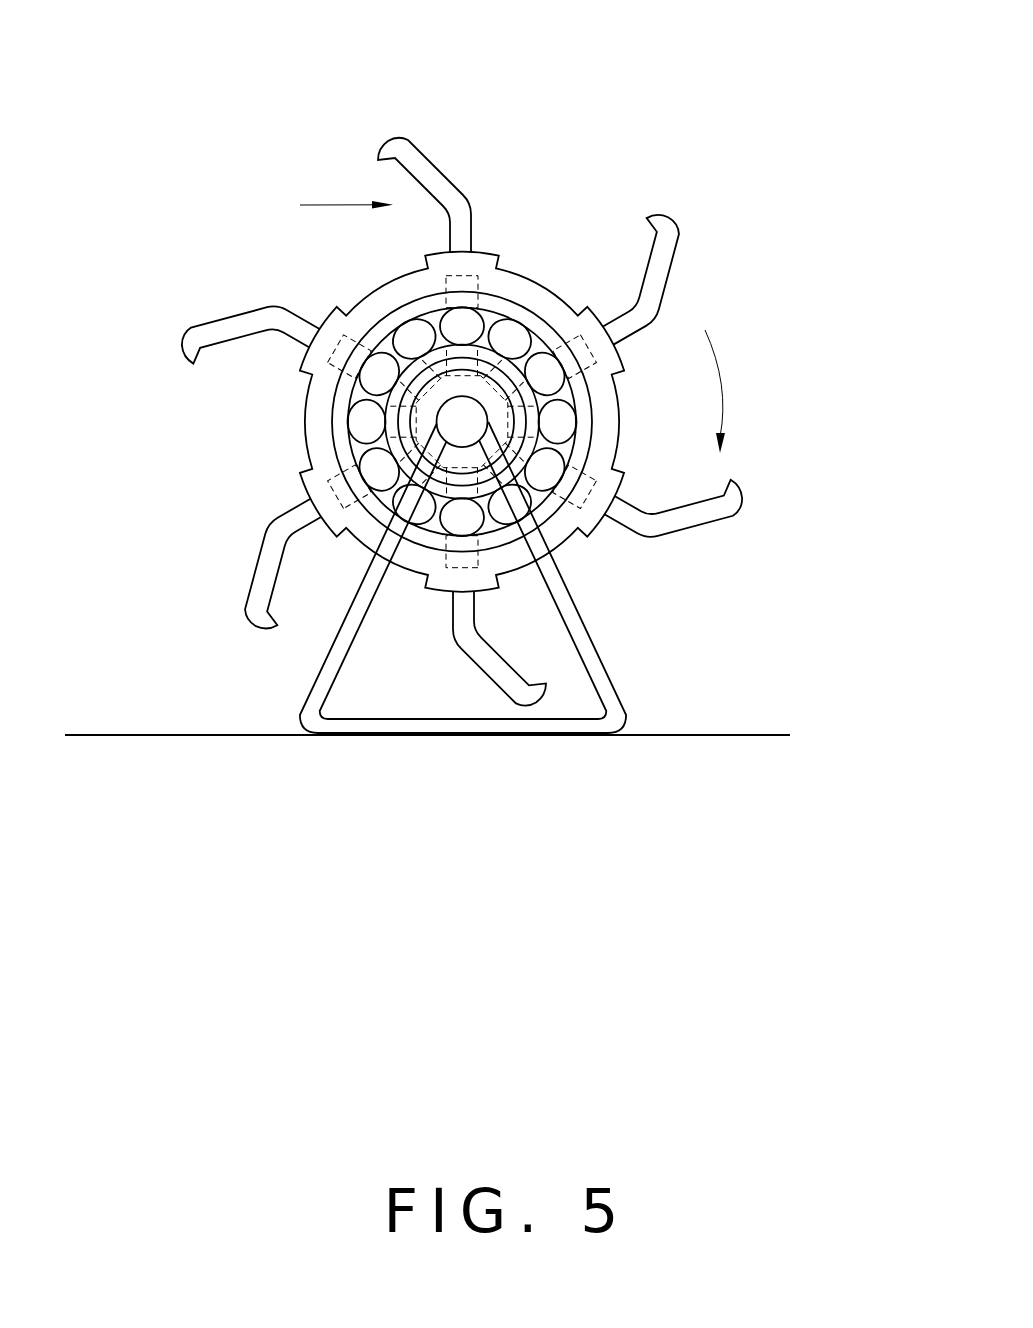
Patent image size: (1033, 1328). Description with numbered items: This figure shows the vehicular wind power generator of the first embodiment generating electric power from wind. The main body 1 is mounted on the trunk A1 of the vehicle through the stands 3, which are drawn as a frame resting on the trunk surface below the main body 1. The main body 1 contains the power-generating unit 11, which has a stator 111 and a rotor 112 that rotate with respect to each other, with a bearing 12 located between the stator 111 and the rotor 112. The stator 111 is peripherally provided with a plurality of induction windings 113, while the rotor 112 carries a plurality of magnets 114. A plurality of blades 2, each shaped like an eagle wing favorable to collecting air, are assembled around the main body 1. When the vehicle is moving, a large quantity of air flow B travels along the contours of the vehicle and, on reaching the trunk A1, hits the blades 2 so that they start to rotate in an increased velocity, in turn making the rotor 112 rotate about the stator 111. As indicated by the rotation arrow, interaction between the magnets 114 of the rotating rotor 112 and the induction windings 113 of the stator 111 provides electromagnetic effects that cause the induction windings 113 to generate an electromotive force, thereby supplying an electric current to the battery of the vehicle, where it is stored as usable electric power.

The main body 1 is at (272, 433).
The power-generating unit 11 is at (693, 130).
The stator 111 is at (498, 362).
The rotor 112 is at (512, 285).
The induction windings 113 is at (483, 333).
The magnets 114 is at (458, 275).
The bearing 12 is at (562, 418).
The blades 2 is at (413, 158).
The stands 3 is at (597, 657).
The trunk A1 is at (717, 734).
The air flow B is at (330, 203).